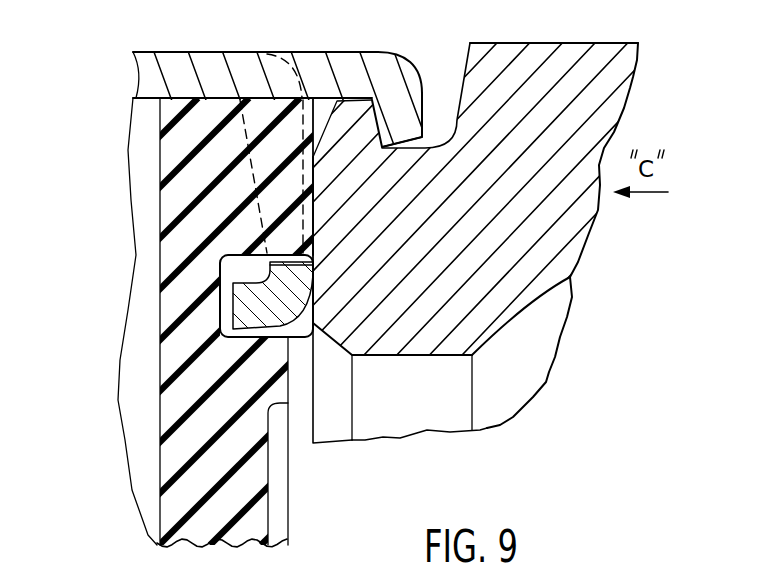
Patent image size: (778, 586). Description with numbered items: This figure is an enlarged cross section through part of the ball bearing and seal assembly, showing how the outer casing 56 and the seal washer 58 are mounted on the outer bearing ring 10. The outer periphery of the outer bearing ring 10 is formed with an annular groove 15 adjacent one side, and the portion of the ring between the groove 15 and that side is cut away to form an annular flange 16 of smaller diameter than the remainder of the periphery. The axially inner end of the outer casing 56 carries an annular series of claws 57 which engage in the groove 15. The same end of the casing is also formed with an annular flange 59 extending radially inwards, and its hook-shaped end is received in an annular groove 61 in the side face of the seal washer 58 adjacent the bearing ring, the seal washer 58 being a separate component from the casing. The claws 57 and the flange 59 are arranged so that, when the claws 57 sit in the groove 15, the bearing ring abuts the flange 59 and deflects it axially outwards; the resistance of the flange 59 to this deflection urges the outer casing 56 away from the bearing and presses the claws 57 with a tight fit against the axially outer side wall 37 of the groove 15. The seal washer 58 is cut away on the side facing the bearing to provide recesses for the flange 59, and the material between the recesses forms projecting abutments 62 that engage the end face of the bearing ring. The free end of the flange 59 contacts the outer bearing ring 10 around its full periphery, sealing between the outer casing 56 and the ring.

The outer bearing ring 10 is at (543, 43).
The annular groove 15 is at (444, 122).
The annular flange 16 is at (358, 132).
The axially outer side wall 37 is at (378, 117).
The outer casing 56 is at (197, 51).
The claws 57 is at (362, 50).
The seal washer 58 is at (170, 343).
The annular flange 59 is at (220, 267).
The annular groove 61 is at (283, 333).
The projecting abutments 62 is at (306, 169).